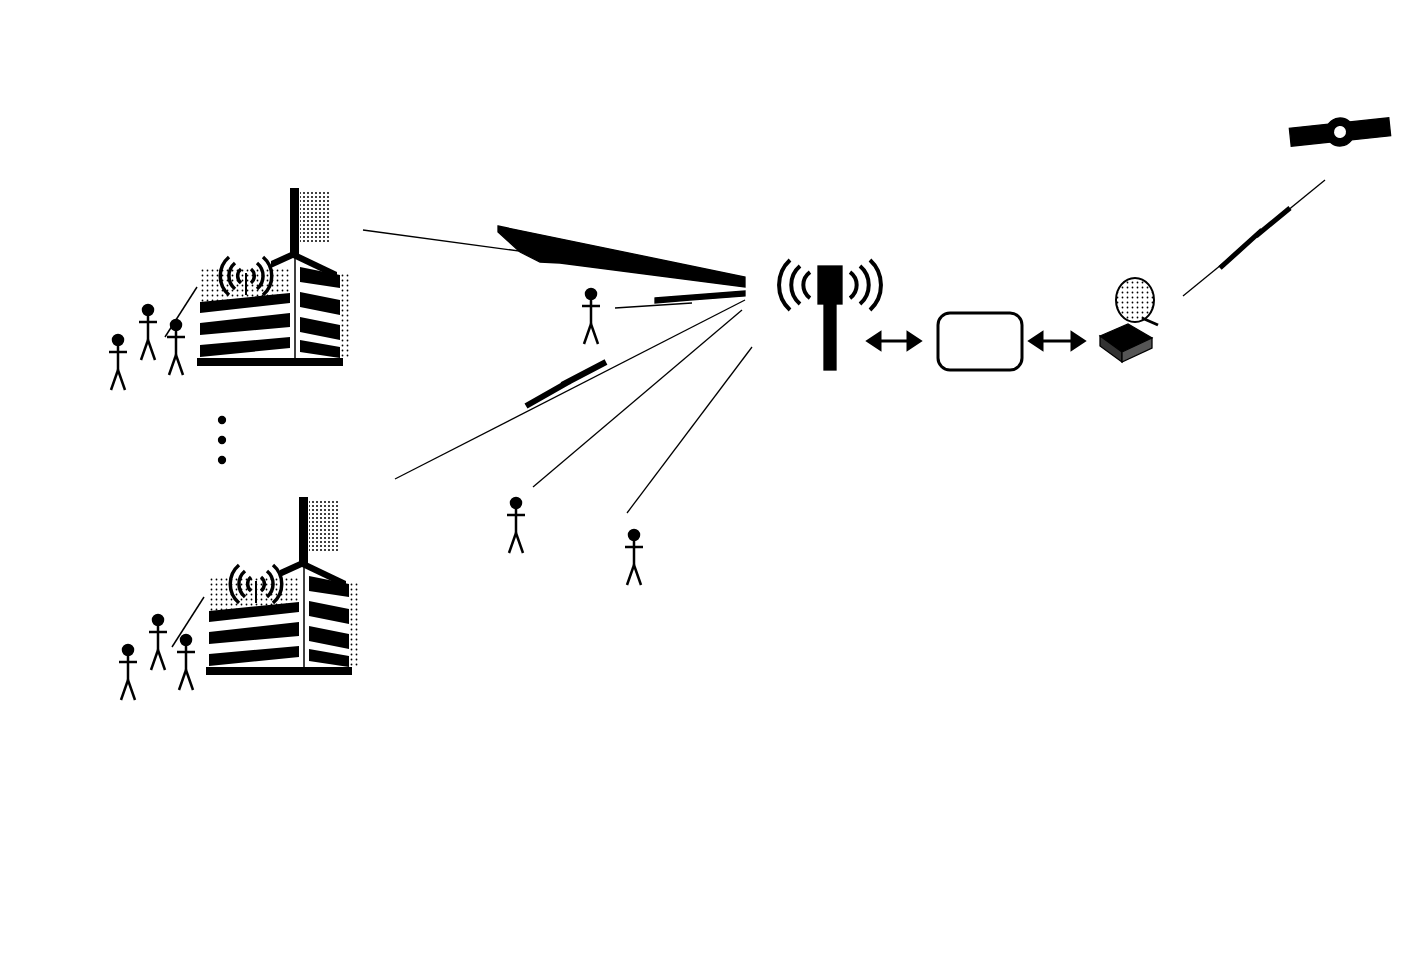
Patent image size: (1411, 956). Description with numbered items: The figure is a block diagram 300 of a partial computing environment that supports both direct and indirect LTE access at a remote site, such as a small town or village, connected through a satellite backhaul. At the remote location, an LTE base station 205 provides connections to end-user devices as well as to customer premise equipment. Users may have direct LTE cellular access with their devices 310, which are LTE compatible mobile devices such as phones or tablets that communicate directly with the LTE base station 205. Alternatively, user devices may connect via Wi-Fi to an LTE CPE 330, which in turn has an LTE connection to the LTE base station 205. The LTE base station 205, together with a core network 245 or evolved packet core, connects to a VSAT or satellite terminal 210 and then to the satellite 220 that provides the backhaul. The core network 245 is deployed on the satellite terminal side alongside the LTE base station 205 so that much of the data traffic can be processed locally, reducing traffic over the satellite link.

The block diagram 300 is at (190, 110).
The LTE CPE 330 is at (350, 108).
The devices 310 is at (510, 308).
The LTE base station 205 is at (822, 252).
The core network 245 is at (978, 372).
The satellite terminal 210 is at (1178, 412).
The satellite 220 is at (1330, 112).